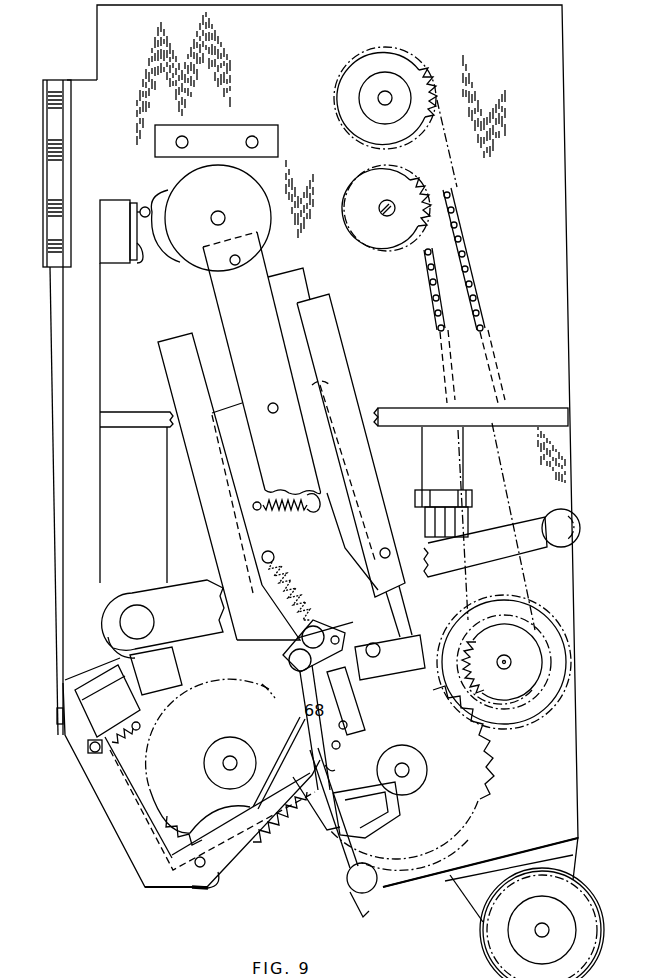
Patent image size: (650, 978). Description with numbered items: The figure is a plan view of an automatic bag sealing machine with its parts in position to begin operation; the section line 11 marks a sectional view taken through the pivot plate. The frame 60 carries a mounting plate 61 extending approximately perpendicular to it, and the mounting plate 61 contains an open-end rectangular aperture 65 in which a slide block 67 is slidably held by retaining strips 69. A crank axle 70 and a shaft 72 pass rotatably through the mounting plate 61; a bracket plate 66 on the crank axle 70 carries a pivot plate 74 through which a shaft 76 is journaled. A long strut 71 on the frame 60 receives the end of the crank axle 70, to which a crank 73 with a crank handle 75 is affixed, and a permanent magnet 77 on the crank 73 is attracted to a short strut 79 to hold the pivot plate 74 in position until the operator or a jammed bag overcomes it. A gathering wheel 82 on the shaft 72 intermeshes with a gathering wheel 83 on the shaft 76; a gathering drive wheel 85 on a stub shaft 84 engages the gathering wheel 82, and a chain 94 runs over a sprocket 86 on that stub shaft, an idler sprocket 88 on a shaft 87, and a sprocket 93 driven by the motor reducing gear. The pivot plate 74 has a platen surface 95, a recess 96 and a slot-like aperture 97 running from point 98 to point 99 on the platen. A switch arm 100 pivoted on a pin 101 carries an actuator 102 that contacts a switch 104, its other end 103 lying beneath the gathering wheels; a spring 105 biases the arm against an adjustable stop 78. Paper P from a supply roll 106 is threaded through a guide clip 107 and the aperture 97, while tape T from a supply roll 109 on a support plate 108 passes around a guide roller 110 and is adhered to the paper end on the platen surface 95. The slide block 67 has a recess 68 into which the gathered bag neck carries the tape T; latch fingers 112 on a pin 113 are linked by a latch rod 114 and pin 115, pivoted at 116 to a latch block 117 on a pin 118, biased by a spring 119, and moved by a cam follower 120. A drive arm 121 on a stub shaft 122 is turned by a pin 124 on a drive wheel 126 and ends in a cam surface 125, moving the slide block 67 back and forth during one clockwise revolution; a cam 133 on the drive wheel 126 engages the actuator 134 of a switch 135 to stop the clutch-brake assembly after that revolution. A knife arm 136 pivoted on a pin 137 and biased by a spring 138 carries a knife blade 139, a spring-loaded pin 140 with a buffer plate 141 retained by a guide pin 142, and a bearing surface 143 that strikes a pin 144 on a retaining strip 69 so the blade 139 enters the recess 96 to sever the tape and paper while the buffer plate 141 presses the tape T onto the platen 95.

The frame 60 is at (112, 420).
The mounting plate 61 is at (565, 730).
The rectangularly shaped aperture 65 is at (283, 290).
The bracket plate 66 is at (140, 668).
The slide block 67 is at (320, 380).
The recess 68 is at (232, 135).
The retaining strips 69 is at (175, 345).
The crank axle 70 is at (128, 623).
The long strut 71 is at (108, 455).
The shaft 72 is at (408, 770).
The crank 73 is at (182, 593).
The pivot plate 74 is at (137, 750).
The crank handle 75 is at (581, 534).
The shaft 76 is at (228, 760).
The permanent magnet 77 is at (470, 514).
The adjustable stop 78 is at (120, 740).
The short strut 79 is at (425, 440).
The gathering wheel 82 is at (470, 748).
The gathering wheel 83 is at (140, 755).
The stub shaft 84 is at (511, 662).
The gathering drive wheel 85 is at (555, 670).
The sprocket 86 is at (513, 643).
The shaft 87 is at (392, 95).
The idler sprocket 88 is at (422, 88).
The sprocket 93 is at (367, 190).
The chain 94 is at (472, 250).
The platen surface 95 is at (300, 718).
The recess 96 is at (265, 692).
The aperture 97 is at (285, 765).
The point 98 is at (275, 795).
The point 99 is at (290, 712).
The switch arm 100 is at (150, 878).
The pin 101 is at (214, 893).
The actuator 102 is at (65, 733).
The other end 103 is at (310, 790).
The switch 104 is at (112, 682).
The spring 105 is at (92, 752).
The supply roll 106 is at (50, 153).
The guide clip 107 is at (58, 718).
The support plate 108 is at (560, 860).
The supply roll 109 is at (580, 913).
The guide roller 110 is at (371, 892).
The latch fingers 112 is at (331, 770).
The pin 113 is at (340, 745).
The latch rod 114 is at (355, 700).
The pin 115 is at (348, 726).
The pivot attachment 116 is at (348, 620).
The latch block 117 is at (330, 655).
The pin 118 is at (290, 662).
The spring 119 is at (275, 553).
The cam follower 120 is at (298, 624).
The drive arm 121 is at (232, 306).
The stub shaft 122 is at (274, 403).
The pin 124 is at (215, 267).
The cam surface 125 is at (375, 597).
The drive wheel 126 is at (190, 185).
The cam 133 is at (160, 205).
The actuator 134 is at (140, 250).
The switch 135 is at (113, 257).
The knife arm 136 is at (396, 600).
The pin 137 is at (376, 645).
The spring 138 is at (300, 500).
The knife blade 139 is at (405, 775).
The spring-loaded pin 140 is at (380, 805).
The buffer plate 141 is at (338, 848).
The guide pin 142 is at (380, 830).
The bearing surface 143 is at (390, 633).
The pin 144 is at (390, 553).
The paper P is at (48, 365).
The tape T is at (447, 880).
The section line 11 is at (287, 653).